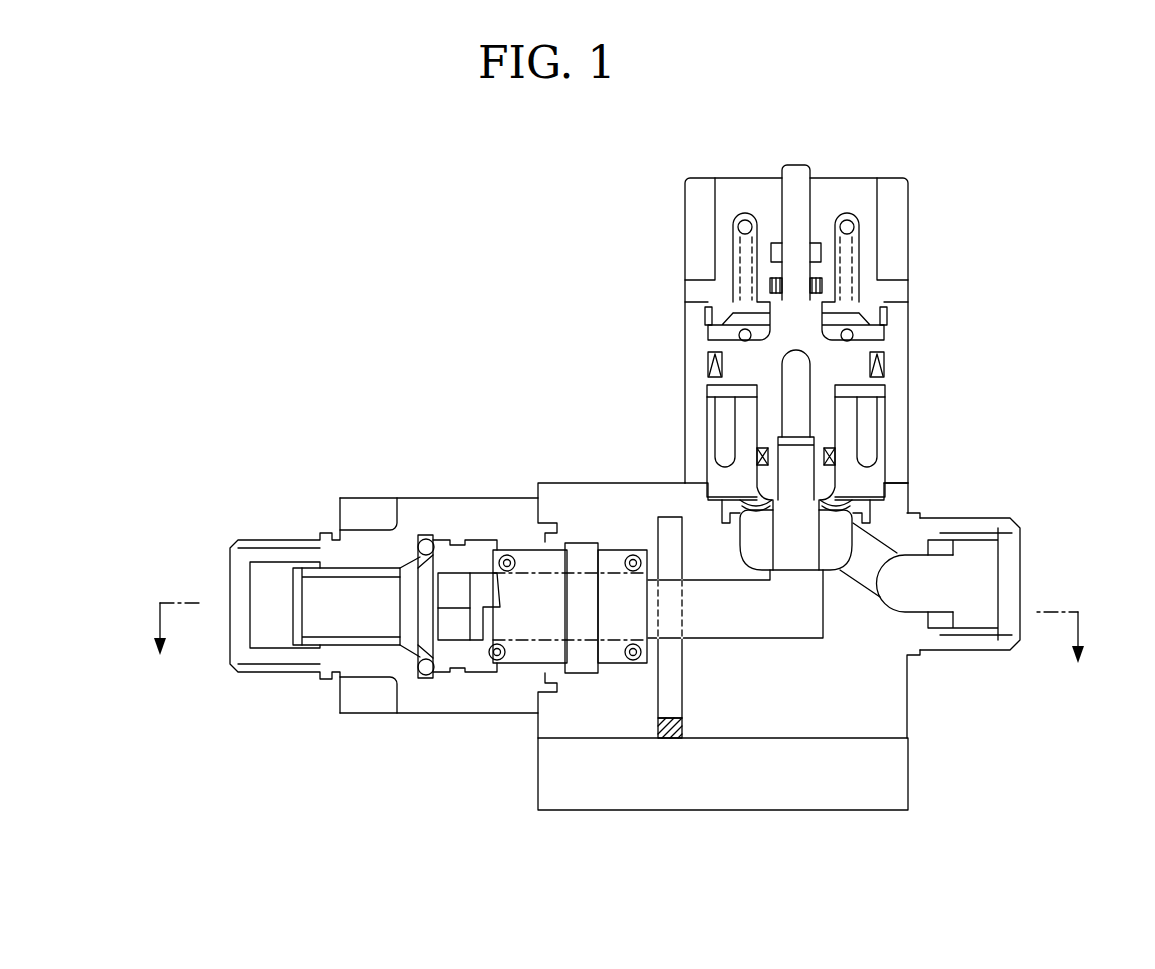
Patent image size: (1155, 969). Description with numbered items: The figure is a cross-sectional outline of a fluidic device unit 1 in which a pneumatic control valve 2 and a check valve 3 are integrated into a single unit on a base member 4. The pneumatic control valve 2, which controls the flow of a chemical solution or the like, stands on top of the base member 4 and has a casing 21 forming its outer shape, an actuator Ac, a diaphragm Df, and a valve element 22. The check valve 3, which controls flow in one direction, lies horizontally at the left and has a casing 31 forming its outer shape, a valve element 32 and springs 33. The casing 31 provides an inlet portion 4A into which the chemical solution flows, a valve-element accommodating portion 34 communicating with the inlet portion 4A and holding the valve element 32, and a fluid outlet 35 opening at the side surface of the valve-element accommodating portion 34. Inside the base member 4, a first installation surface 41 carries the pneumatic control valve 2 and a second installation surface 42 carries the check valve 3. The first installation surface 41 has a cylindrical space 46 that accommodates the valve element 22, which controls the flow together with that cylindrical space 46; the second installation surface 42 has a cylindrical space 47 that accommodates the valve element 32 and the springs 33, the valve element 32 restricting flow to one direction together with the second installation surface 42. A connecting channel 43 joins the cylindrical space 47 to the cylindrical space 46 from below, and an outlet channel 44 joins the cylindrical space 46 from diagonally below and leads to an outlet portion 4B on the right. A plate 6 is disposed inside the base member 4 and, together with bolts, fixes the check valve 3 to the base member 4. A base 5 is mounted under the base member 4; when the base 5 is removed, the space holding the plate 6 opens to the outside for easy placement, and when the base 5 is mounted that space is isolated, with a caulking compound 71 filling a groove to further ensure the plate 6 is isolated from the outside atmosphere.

The fluidic device unit 1 is at (387, 182).
The pneumatic control valve 2 is at (862, 170).
The casing 21 is at (692, 213).
The actuator Ac is at (698, 339).
The diaphragm Df is at (838, 497).
The valve element 22 is at (797, 575).
The check valve 3 is at (345, 485).
The casing 31 is at (407, 505).
The valve element 32 is at (427, 602).
The springs 33 is at (635, 660).
The valve-element accommodating portion 34 is at (532, 560).
The fluid outlet 35 is at (470, 535).
The base member 4 is at (926, 712).
The inlet portion 4A is at (270, 545).
The outlet portion 4B is at (997, 532).
The first installation surface 41 is at (887, 490).
The second installation surface 42 is at (545, 678).
The connecting channel 43 is at (730, 630).
The outlet channel 44 is at (890, 595).
The cylindrical space 46 is at (745, 540).
The cylindrical space 47 is at (583, 655).
The base 5 is at (813, 826).
The plate 6 is at (668, 520).
The caulking compound 71 is at (670, 740).